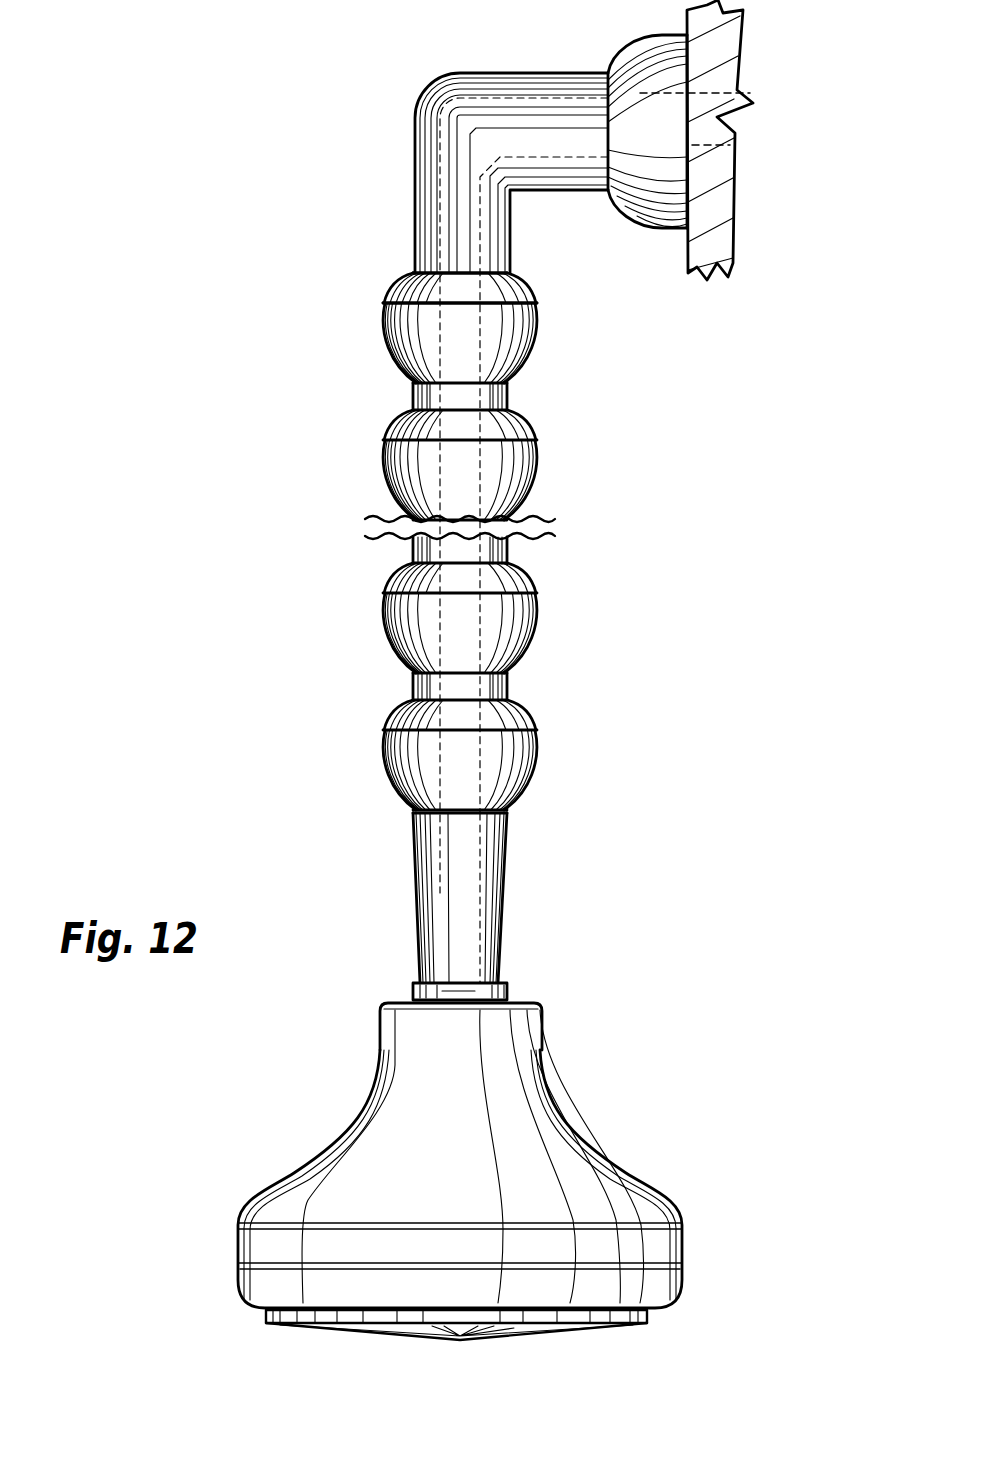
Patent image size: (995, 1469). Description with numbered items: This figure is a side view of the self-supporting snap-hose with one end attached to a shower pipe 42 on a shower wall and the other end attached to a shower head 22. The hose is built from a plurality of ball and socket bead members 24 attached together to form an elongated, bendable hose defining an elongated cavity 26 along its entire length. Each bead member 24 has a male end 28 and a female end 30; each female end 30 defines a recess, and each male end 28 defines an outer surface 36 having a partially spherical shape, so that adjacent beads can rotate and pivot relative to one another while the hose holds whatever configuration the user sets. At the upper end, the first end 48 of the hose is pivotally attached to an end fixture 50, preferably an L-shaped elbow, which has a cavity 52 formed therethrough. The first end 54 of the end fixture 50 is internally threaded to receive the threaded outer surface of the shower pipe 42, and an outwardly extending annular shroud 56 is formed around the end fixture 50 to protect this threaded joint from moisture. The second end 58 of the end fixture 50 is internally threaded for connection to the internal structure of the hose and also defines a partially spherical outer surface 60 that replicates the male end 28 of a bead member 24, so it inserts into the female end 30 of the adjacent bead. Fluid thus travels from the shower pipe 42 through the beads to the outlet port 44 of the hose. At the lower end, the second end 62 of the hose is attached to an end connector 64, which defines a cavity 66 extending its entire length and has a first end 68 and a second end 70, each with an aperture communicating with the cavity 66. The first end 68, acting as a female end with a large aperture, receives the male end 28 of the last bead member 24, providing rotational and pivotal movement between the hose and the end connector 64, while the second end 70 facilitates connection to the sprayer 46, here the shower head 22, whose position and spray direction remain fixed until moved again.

The shower head 22 is at (498, 1171).
The ball and socket bead member 24 is at (465, 500).
The elongated cavity 26 is at (484, 626).
The male end 28 is at (462, 584).
The female end 30 is at (462, 449).
The outer surface 36 is at (462, 600).
The shower pipe 42 is at (720, 146).
The outlet port 44 is at (432, 898).
The sprayer 46 is at (650, 1320).
The first end 48 is at (542, 308).
The end fixture 50 is at (440, 450).
The cavity 52 is at (497, 105).
The first end 54 is at (657, 228).
The annular shroud 56 is at (629, 147).
The second end 58 is at (410, 275).
The partially spherical outer surface 60 is at (528, 293).
The second end 62 is at (450, 717).
The end connector 64 is at (415, 815).
The cavity 66 is at (482, 888).
The first end 68 is at (403, 767).
The second end 70 is at (500, 967).